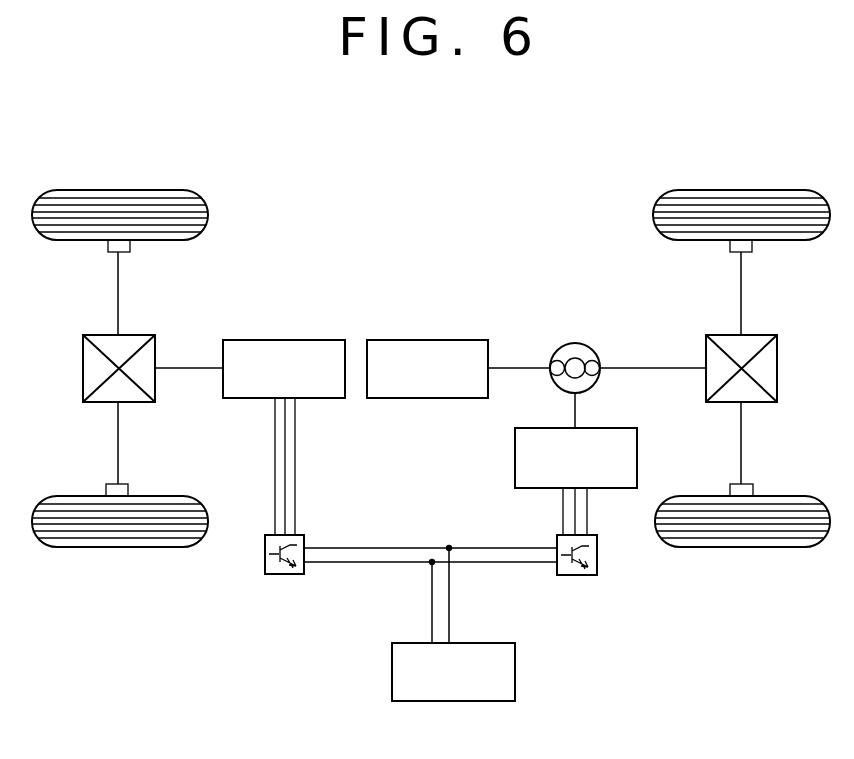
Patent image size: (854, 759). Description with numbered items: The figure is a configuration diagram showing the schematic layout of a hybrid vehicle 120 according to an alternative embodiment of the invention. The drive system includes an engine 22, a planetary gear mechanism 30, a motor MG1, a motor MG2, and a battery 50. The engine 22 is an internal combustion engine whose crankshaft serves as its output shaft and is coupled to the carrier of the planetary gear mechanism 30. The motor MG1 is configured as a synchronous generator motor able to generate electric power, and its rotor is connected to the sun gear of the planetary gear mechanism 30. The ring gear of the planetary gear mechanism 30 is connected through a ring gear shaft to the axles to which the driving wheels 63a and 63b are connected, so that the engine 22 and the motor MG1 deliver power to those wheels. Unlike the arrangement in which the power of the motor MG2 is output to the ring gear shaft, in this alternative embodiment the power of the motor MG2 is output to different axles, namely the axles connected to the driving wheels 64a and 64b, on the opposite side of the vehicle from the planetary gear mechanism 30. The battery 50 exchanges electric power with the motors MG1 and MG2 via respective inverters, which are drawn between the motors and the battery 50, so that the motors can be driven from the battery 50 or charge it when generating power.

The hybrid vehicle 120 is at (468, 138).
The driving wheel 64a is at (118, 190).
The driving wheel 64b is at (118, 547).
The driving wheel 63a is at (742, 190).
The driving wheel 63b is at (742, 547).
The motor MG2 is at (283, 340).
The engine 22 is at (430, 340).
The planetary gear mechanism 30 is at (572, 343).
The motor MG1 is at (515, 458).
The battery 50 is at (515, 668).